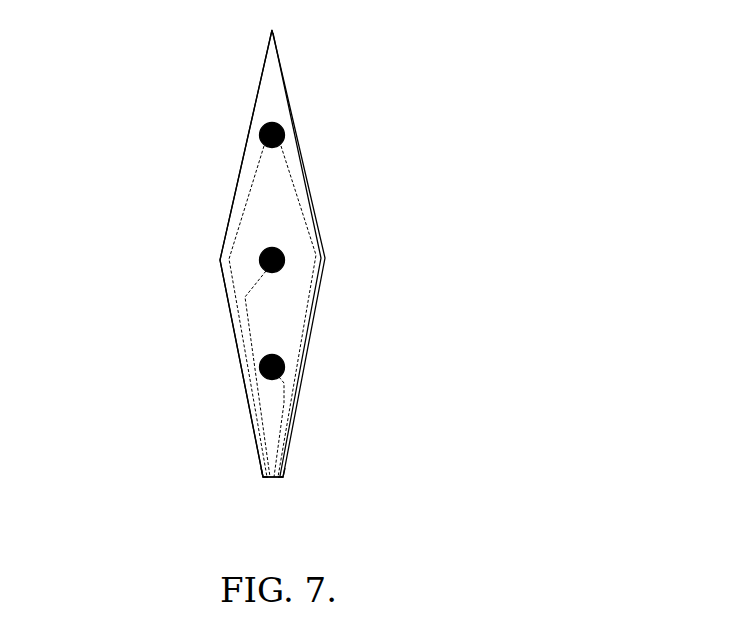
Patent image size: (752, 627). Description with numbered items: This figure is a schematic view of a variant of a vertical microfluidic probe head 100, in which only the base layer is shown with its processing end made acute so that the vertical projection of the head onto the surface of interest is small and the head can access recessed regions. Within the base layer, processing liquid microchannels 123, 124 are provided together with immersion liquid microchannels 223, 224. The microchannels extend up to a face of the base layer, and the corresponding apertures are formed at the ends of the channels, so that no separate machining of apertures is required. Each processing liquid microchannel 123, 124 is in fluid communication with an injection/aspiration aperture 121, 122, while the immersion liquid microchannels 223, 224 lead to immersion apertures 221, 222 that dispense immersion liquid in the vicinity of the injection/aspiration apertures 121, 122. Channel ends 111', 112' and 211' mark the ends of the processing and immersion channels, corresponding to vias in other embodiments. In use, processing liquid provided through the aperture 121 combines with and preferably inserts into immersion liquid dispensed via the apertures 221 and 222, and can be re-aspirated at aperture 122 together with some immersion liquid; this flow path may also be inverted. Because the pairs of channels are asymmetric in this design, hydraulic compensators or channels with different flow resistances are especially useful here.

The head 100 is at (493, 410).
The channel end 111' is at (188, 352).
The channel end 112' is at (331, 329).
The aperture 121 is at (272, 480).
The aperture 122 is at (331, 497).
The processing liquid microchannel 123 is at (228, 372).
The processing liquid microchannel 124 is at (284, 403).
The channel end 211' is at (351, 118).
The aperture 221 is at (262, 470).
The aperture 222 is at (283, 472).
The immersion liquid microchannel 223 is at (237, 326).
The immersion liquid microchannel 224 is at (305, 347).